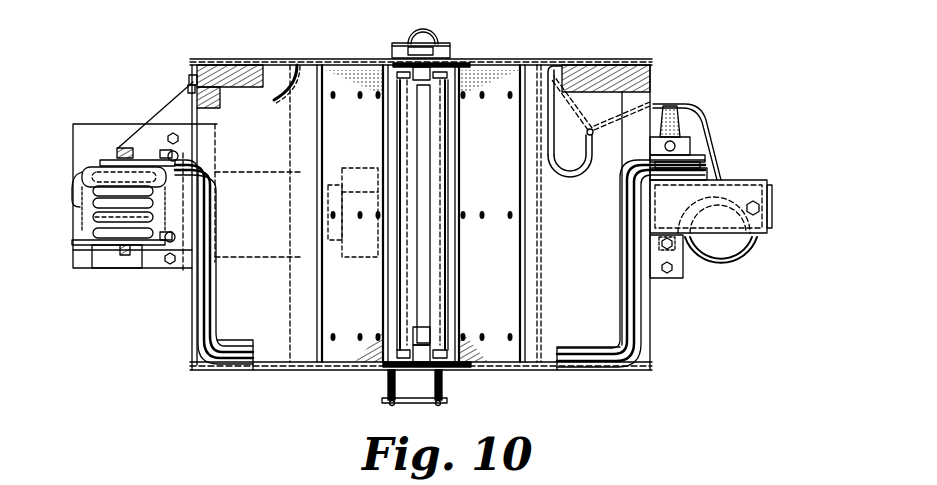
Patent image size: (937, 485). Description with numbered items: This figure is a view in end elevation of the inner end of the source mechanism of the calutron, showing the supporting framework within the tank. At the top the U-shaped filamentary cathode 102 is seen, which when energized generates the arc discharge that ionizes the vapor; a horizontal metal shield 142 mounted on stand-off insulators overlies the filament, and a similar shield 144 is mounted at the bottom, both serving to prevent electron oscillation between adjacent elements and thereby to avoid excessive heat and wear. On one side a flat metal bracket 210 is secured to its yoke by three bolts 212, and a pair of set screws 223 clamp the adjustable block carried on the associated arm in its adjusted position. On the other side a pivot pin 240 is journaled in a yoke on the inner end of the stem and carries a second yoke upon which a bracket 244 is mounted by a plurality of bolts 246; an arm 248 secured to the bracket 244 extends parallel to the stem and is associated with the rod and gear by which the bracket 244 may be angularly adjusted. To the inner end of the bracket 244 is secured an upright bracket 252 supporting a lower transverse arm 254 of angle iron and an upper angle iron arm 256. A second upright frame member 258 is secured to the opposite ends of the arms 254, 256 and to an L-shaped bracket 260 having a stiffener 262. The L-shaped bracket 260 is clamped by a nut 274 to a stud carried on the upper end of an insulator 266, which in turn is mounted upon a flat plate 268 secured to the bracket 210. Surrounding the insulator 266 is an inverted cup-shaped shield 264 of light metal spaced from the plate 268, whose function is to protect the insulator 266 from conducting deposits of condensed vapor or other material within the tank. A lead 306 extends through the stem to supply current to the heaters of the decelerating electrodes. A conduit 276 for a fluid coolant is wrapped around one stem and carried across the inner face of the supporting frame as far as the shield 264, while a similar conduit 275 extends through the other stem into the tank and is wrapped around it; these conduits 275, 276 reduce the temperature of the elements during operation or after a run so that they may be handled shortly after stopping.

The U-shaped filamentary cathode 102 is at (440, 46).
The horizontal metal shield 142 is at (410, 46).
The shield 144 is at (430, 406).
The flat metal bracket 210 is at (97, 124).
The bolts 212 is at (165, 245).
The set screws 223 is at (362, 168).
The pivot pin 240 is at (772, 194).
The bracket 244 is at (758, 238).
The bolts 246 is at (760, 211).
The arm 248 is at (683, 269).
The upright bracket 252 is at (640, 100).
The lower transverse arm 254 is at (207, 368).
The upper angle iron arm 256 is at (238, 59).
The second upright frame member 258 is at (195, 76).
The L-shaped bracket 260 is at (192, 82).
The stiffener 262 is at (165, 102).
The inverted cup-shaped shield 264 is at (100, 163).
The insulator 266 is at (90, 208).
The flat plate 268 is at (73, 243).
The nut 274 is at (117, 151).
The conduit 275 is at (647, 331).
The conduit 276 is at (205, 307).
The lead 306 is at (711, 128).